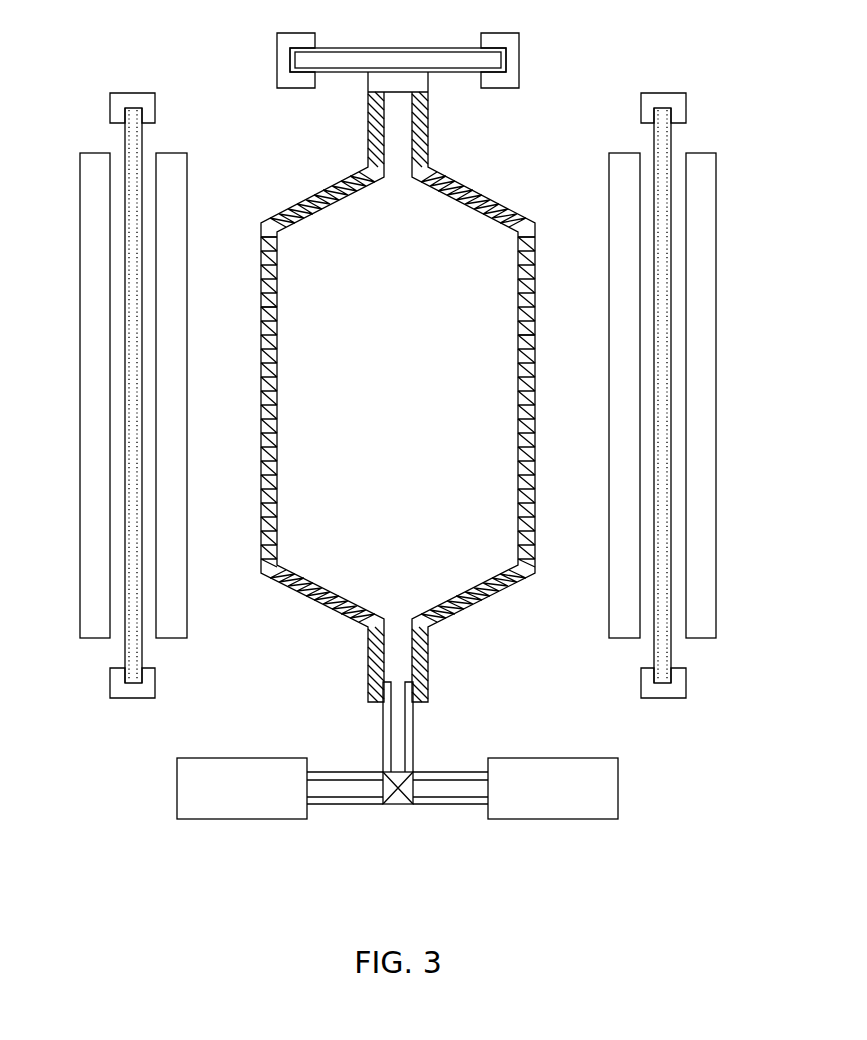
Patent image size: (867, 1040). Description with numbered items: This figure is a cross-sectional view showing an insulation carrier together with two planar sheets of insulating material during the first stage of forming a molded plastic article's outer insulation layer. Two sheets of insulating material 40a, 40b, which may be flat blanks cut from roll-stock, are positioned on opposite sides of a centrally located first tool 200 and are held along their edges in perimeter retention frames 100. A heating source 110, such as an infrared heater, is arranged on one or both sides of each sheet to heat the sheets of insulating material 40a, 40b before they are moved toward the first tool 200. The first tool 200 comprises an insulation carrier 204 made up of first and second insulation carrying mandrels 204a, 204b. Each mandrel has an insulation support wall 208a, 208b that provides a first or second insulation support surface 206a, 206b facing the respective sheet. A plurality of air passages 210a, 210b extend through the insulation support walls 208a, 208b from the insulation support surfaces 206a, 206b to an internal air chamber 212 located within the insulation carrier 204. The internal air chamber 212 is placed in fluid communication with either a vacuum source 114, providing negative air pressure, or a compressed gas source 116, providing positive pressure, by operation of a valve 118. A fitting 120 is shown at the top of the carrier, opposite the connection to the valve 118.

The top flange fitting 120 is at (265, 25).
The perimeter retention frame 100 is at (135, 93).
The sheet of insulating material 40a is at (100, 133).
The sheet of insulating material 40b is at (696, 133).
The heating source 110 is at (95, 622).
The insulation carrier 204 is at (399, 397).
The first insulation support surface 206a is at (293, 205).
The second insulation support surface 206b is at (503, 207).
The insulation support wall 208a is at (277, 251).
The insulation support wall 208b is at (518, 252).
The air passages 210a is at (277, 311).
The air passages 210b is at (518, 338).
The internal air chamber 212 is at (382, 405).
The first insulation carrying mandrel 204a is at (282, 462).
The second insulation carrying mandrel 204b is at (516, 487).
The first tool 200 is at (362, 682).
The valve 118 is at (395, 802).
The compressed gas source 116 is at (242, 788).
The vacuum source 114 is at (553, 788).